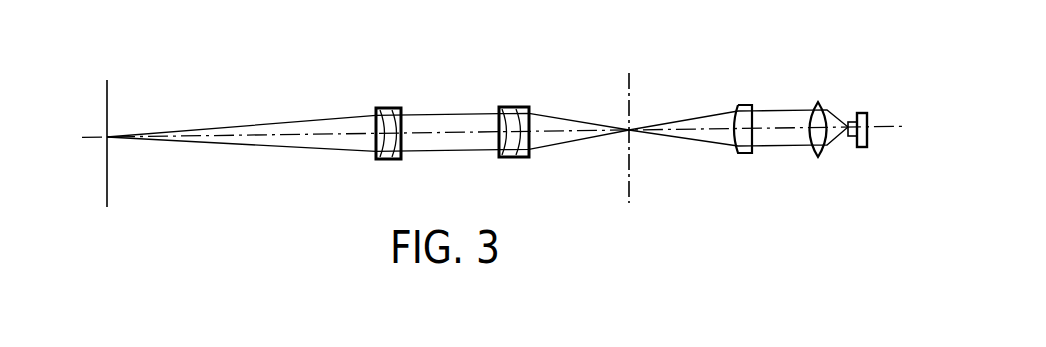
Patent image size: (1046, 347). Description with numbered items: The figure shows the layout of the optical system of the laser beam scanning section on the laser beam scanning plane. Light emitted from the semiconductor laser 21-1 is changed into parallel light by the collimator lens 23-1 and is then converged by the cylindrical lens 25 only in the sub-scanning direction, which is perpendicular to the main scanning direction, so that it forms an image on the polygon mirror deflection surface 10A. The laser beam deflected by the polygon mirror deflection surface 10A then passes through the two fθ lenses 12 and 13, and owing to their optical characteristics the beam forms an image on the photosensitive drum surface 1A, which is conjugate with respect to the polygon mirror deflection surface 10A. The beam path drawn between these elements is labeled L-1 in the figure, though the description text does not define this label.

The photosensitive drum surface 1A is at (107, 107).
The light beam L-1 is at (212, 133).
The fθ lens 13 is at (391, 107).
The fθ lens 12 is at (516, 107).
The polygon mirror deflection surface 10A is at (631, 93).
The cylindrical lens 25 is at (747, 156).
The collimator lens 23-1 is at (818, 158).
The semiconductor laser 21-1 is at (862, 112).